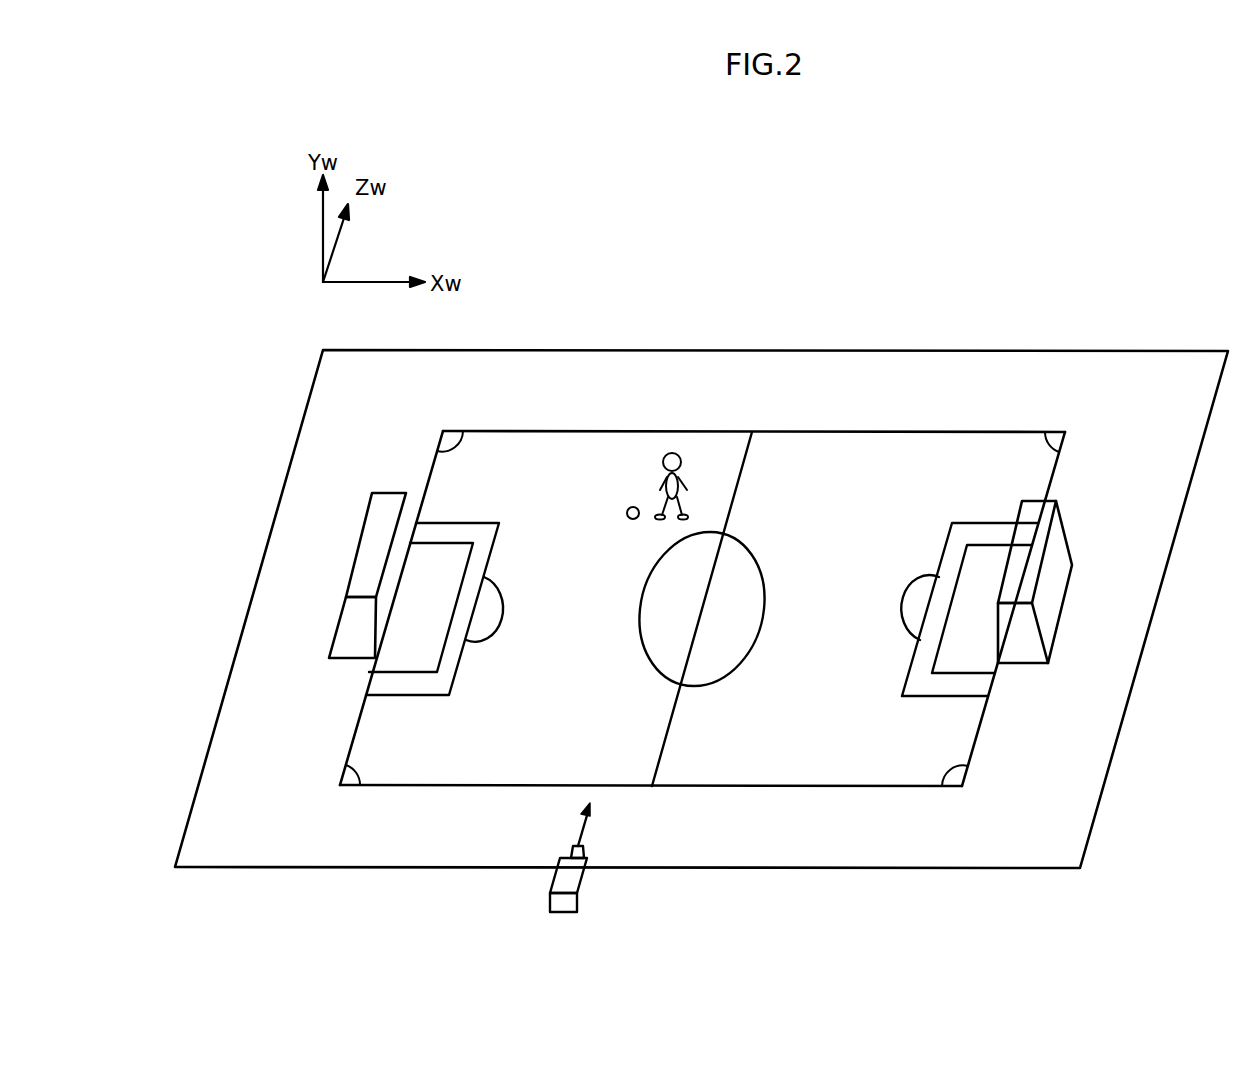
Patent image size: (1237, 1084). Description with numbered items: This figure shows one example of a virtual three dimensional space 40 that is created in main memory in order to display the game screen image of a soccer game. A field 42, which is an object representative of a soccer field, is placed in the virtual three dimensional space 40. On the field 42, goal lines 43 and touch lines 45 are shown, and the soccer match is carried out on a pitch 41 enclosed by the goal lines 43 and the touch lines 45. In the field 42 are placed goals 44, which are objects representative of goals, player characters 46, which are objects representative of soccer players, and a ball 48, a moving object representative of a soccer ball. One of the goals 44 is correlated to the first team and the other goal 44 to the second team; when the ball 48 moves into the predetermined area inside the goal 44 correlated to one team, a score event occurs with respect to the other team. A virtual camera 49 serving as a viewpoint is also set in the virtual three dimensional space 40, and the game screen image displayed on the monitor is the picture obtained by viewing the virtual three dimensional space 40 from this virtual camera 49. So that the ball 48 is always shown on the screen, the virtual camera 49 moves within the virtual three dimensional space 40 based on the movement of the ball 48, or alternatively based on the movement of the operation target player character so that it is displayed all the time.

The virtual three dimensional space 40 is at (662, 240).
The pitch 41 is at (733, 788).
The field 42 is at (920, 366).
The goal lines 43 is at (350, 731).
The goals 44 is at (332, 632).
The touch lines 45 is at (1010, 432).
The player characters 46 is at (672, 450).
The ball 48 is at (625, 512).
The virtual camera 49 is at (582, 880).